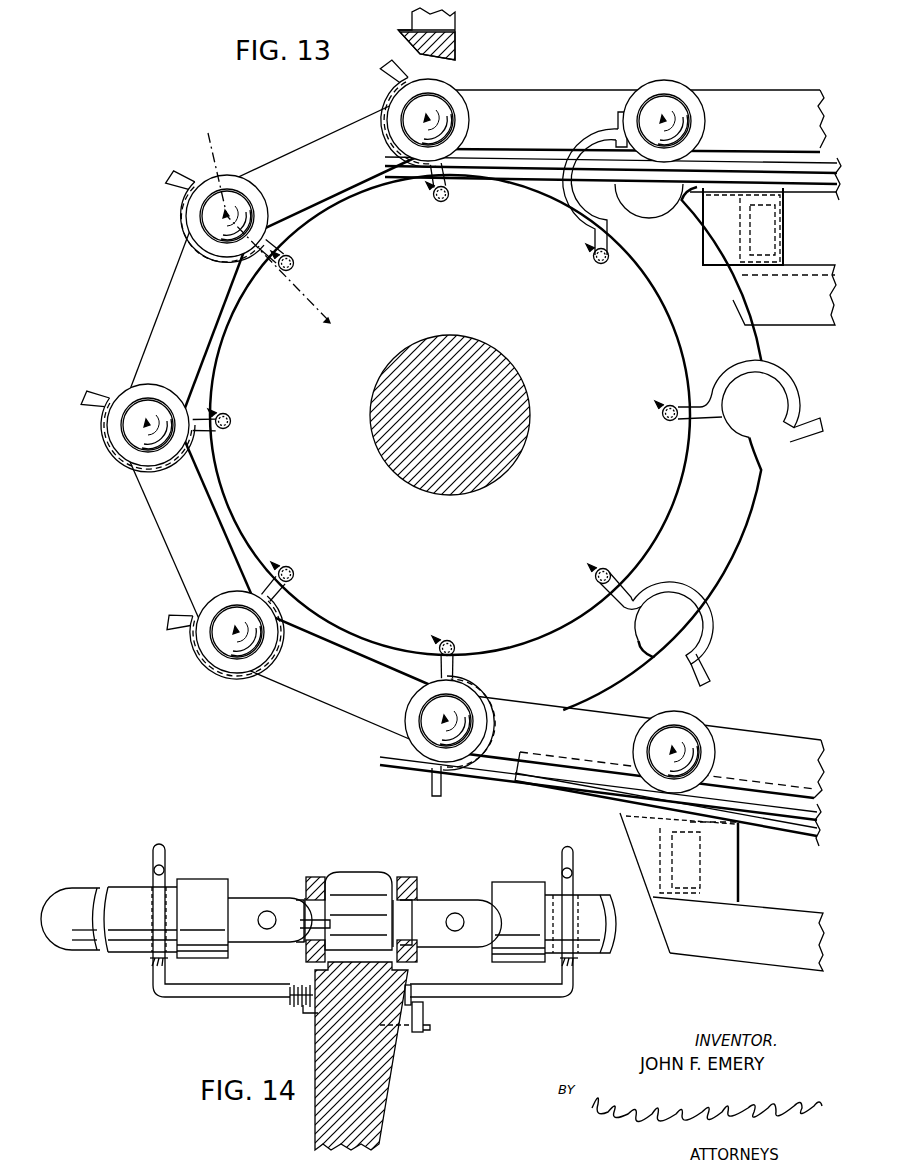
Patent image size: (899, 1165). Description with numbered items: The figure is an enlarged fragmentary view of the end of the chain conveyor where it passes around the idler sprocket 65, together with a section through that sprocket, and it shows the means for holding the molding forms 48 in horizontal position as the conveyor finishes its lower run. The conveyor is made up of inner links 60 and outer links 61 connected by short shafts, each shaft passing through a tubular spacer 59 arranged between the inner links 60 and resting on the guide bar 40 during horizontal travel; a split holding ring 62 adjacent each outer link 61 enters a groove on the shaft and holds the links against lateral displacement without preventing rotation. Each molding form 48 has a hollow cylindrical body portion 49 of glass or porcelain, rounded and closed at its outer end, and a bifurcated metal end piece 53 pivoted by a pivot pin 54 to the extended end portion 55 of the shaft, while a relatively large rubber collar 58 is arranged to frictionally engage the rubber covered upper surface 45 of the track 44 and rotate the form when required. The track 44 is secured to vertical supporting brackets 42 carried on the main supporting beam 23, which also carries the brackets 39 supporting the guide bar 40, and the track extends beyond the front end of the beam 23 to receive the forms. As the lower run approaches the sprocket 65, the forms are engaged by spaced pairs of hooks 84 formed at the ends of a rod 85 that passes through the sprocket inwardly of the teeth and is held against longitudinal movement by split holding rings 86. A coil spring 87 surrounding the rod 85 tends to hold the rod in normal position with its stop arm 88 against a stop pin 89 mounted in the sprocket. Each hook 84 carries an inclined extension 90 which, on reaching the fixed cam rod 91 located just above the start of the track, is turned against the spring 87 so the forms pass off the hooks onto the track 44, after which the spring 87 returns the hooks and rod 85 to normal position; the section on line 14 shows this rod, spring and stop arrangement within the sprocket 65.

In FIG. 13, the section line 14 is at (206, 132).
In FIG. 13, the main supporting beam 23 is at (812, 322).
In FIG. 13, the vertical supporting bracket 39 is at (772, 255).
In FIG. 13, the guide bar 40 is at (808, 190).
In FIG. 13, the vertical supporting bracket 42 is at (780, 233).
In FIG. 13, the track 44 is at (540, 176).
In FIG. 13, the rubber covered upper surface 45 is at (500, 178).
In FIG. 14, the molding form 48 is at (130, 880).
In FIG. 13, the hollow cylindrical body portion 49 is at (466, 131).
In FIG. 14, the hollow cylindrical body portion 49 is at (92, 952).
In FIG. 14, the metal end piece 53 is at (240, 900).
In FIG. 14, the pivot pin 54 is at (270, 912).
In FIG. 14, the extended end portion 55 is at (295, 910).
In FIG. 13, the rubber collar 58 is at (446, 88).
In FIG. 14, the rubber collar 58 is at (194, 884).
In FIG. 14, the tubular spacer 59 is at (312, 950).
In FIG. 13, the inner link 60 is at (312, 152).
In FIG. 14, the inner link 60 is at (396, 872).
In FIG. 13, the outer link 61 is at (513, 99).
In FIG. 14, the outer link 61 is at (314, 877).
In FIG. 14, the split holding ring 62 is at (298, 937).
In FIG. 13, the idler sprocket 65 is at (225, 333).
In FIG. 14, the idler sprocket 65 is at (404, 1084).
In FIG. 13, the hook 84 is at (388, 100).
In FIG. 14, the hook 84 is at (152, 960).
In FIG. 14, the rod 85 is at (230, 1000).
In FIG. 14, the split holding ring 86 is at (300, 988).
In FIG. 13, the coil spring 87 is at (443, 204).
In FIG. 14, the coil spring 87 is at (302, 1012).
In FIG. 14, the stop arm 88 is at (424, 1017).
In FIG. 14, the stop pin 89 is at (414, 1030).
In FIG. 13, the inclined extension 90 is at (406, 66).
In FIG. 14, the inclined extension 90 is at (166, 850).
In FIG. 13, the cam rod 91 is at (456, 47).